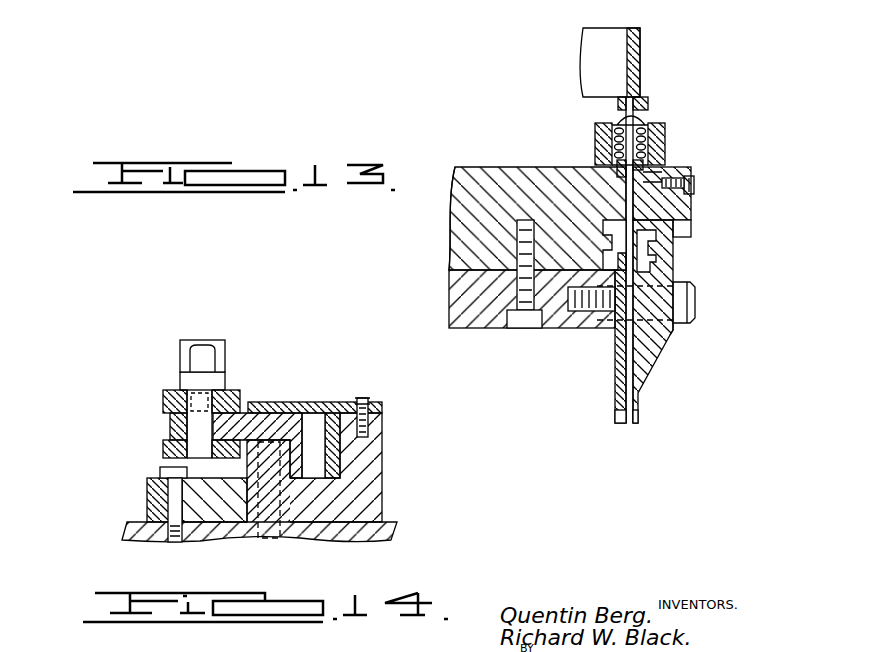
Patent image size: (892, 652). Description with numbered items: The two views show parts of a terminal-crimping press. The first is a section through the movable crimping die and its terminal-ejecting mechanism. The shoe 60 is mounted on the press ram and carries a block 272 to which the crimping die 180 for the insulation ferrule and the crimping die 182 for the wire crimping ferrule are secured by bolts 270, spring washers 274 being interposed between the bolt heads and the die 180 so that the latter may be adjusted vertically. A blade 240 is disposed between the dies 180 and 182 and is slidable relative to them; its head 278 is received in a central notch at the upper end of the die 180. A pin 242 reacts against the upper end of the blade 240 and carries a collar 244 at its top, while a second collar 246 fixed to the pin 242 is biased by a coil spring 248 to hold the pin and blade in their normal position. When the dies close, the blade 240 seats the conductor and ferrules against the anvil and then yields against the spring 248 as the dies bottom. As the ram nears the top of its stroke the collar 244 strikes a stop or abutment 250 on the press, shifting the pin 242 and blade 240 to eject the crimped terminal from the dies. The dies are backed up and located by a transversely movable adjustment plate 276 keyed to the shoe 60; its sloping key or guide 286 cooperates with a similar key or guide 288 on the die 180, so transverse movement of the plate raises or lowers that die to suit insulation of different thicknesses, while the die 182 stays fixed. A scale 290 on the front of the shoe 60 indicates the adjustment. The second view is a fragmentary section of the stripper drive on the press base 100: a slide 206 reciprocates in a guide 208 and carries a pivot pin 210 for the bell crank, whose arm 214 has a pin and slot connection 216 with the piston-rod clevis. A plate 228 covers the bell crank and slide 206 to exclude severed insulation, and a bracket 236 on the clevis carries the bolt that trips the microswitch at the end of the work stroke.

In FIG. 13, the shoe 60 is at (456, 229).
In FIG. 13, the crimping die 180 is at (650, 362).
In FIG. 13, the crimping die 182 is at (616, 378).
In FIG. 13, the blade 240 is at (640, 408).
In FIG. 13, the pin 242 is at (626, 190).
In FIG. 13, the collar 244 is at (649, 101).
In FIG. 13, the second collar 246 is at (673, 163).
In FIG. 13, the coil spring 248 is at (664, 130).
In FIG. 13, the stop or abutment 250 is at (641, 62).
In FIG. 13, the bolts 270 is at (698, 300).
In FIG. 13, the block 272 is at (467, 322).
In FIG. 13, the spring washers 274 is at (680, 333).
In FIG. 13, the adjustment plate 276 is at (692, 232).
In FIG. 13, the head 278 is at (658, 250).
In FIG. 13, the sloping key or guide 286 is at (688, 248).
In FIG. 13, the key or guide 288 is at (697, 196).
In FIG. 13, the scale 290 is at (697, 178).
In FIG. 14, the base 100 is at (128, 526).
In FIG. 14, the slide 206 is at (338, 468).
In FIG. 14, the guide 208 is at (362, 502).
In FIG. 14, the pivot pin 210 is at (305, 428).
In FIG. 14, the arm 214 is at (258, 414).
In FIG. 14, the pin and slot connection 216 is at (205, 427).
In FIG. 14, the plate 228 is at (301, 420).
In FIG. 14, the bracket 236 is at (182, 356).